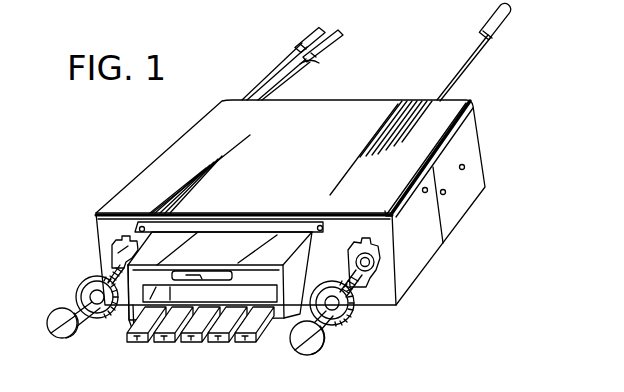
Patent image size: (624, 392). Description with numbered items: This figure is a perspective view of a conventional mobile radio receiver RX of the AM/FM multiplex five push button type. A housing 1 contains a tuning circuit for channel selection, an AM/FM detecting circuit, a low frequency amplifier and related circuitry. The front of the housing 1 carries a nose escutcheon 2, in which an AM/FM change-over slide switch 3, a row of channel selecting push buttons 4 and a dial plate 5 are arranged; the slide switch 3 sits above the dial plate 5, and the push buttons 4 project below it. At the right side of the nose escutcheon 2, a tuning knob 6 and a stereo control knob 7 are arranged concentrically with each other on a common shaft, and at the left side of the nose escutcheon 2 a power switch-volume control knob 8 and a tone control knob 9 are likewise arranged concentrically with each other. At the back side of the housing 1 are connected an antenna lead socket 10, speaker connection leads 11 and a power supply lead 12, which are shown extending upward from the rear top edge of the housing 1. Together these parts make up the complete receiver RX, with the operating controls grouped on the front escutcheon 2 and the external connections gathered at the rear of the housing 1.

The housing 1 is at (376, 115).
The nose escutcheon 2 is at (273, 238).
The AM/FM change-over slide switch 3 is at (198, 275).
The channel selecting push buttons 4 is at (208, 337).
The dial plate 5 is at (132, 306).
The tuning knob 6 is at (296, 355).
The stereo control knob 7 is at (356, 323).
The power switch-volume control knob 8 is at (49, 332).
The tone control knob 9 is at (78, 288).
The antenna lead socket 10 is at (507, 23).
The speaker connection leads 11 is at (318, 63).
The power supply lead 12 is at (271, 76).
The radio receiver RX is at (203, 148).